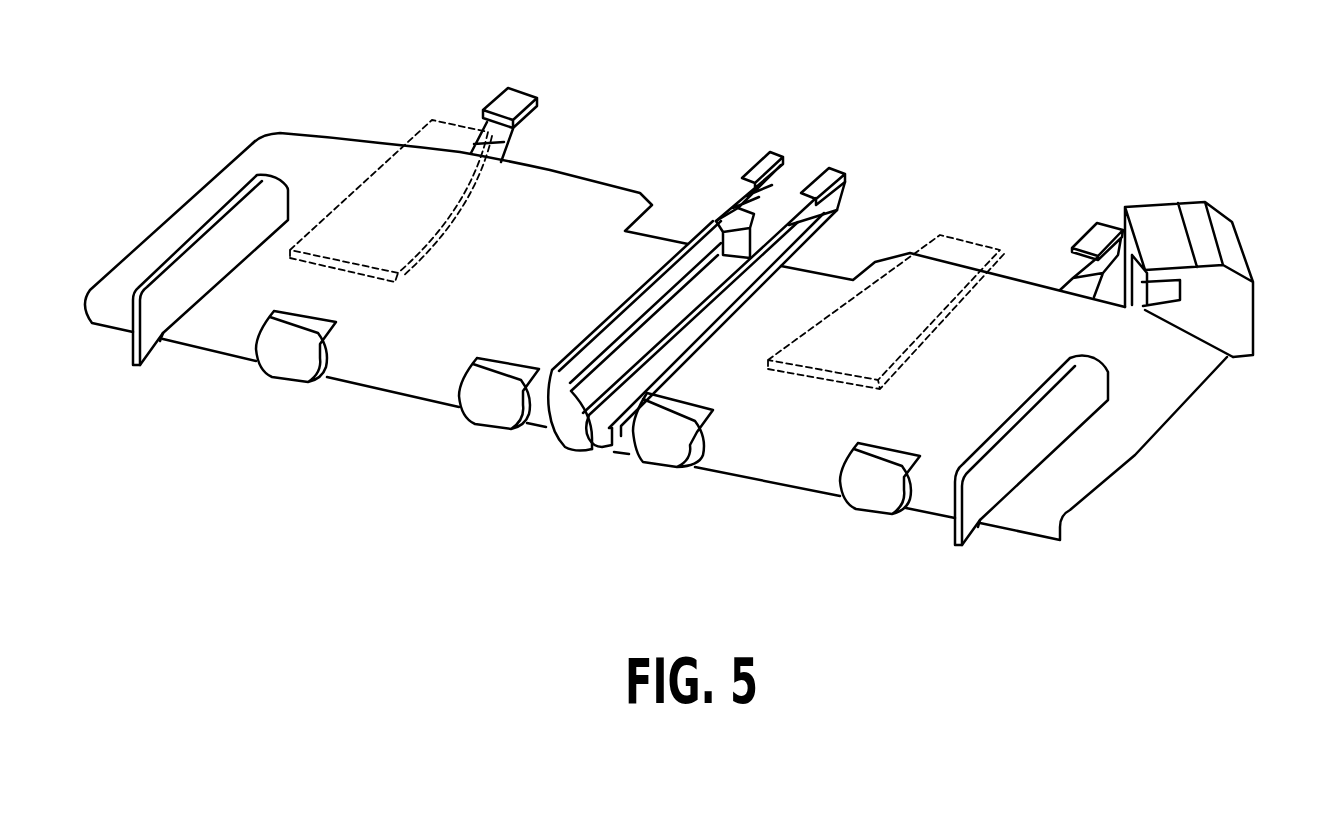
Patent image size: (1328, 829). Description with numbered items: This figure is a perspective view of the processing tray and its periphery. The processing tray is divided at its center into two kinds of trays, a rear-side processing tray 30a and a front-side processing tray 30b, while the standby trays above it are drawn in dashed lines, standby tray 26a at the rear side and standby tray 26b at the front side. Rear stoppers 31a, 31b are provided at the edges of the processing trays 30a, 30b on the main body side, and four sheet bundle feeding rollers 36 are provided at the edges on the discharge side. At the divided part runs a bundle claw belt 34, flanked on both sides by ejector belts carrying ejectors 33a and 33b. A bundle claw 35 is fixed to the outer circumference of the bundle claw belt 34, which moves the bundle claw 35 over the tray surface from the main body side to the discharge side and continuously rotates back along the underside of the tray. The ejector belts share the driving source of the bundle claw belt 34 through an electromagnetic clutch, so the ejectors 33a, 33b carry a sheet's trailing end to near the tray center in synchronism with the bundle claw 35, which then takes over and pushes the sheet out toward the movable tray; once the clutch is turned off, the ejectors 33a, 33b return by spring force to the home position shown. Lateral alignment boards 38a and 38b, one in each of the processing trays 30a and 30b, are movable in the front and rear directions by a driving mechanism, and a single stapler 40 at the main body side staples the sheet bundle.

The standby tray 26a is at (448, 120).
The standby tray 26b is at (970, 242).
The processing tray 30a is at (432, 368).
The processing tray 30b is at (810, 453).
The rear stopper 31a is at (537, 110).
The rear stopper 31b is at (1105, 222).
The ejector 33a is at (758, 150).
The ejector 33b is at (837, 173).
The bundle claw belt 34 is at (607, 378).
The bundle claw 35 is at (781, 231).
The sheet bundle feeding roller 36 is at (290, 377).
The lateral alignment board 38a is at (213, 237).
The lateral alignment board 38b is at (1062, 430).
The stapler 40 is at (1257, 323).